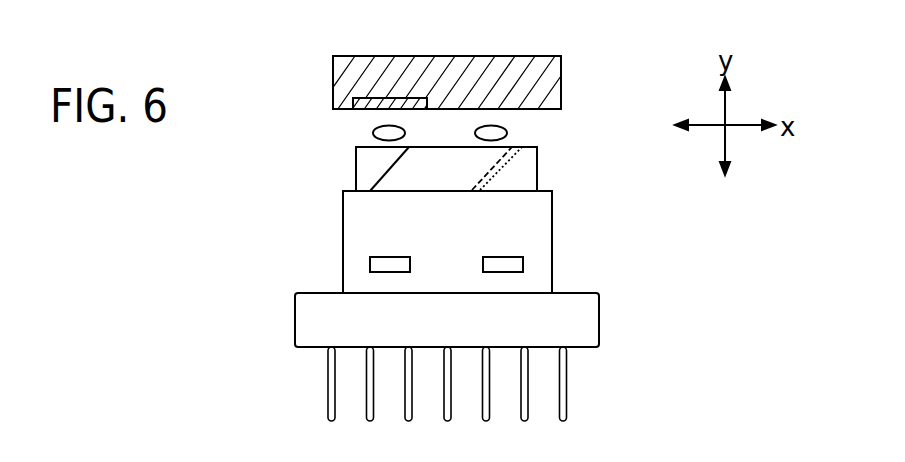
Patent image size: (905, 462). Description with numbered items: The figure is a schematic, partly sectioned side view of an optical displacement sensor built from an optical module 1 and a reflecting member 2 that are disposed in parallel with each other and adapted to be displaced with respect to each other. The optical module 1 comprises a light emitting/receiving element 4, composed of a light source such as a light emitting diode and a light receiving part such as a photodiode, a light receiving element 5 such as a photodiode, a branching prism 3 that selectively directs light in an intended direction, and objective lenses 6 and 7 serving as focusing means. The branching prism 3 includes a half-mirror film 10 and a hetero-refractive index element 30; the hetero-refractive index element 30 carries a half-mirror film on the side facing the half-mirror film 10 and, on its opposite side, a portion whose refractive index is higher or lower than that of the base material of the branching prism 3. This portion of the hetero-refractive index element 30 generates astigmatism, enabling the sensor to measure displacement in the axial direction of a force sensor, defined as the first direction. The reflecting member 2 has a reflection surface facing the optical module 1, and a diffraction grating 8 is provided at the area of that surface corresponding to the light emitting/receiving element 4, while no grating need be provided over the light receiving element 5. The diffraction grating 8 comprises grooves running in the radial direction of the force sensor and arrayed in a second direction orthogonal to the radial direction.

The optical module 1 is at (614, 117).
The reflecting member 2 is at (563, 75).
The branching prism 3 is at (541, 165).
The hetero-refractive index element 30 is at (474, 189).
The light emitting/receiving element 4 is at (376, 262).
The light receiving element 5 is at (516, 265).
The objective lens 6 is at (374, 133).
The objective lens 7 is at (500, 129).
The diffraction grating 8 is at (362, 107).
The half-mirror film 10 is at (386, 172).